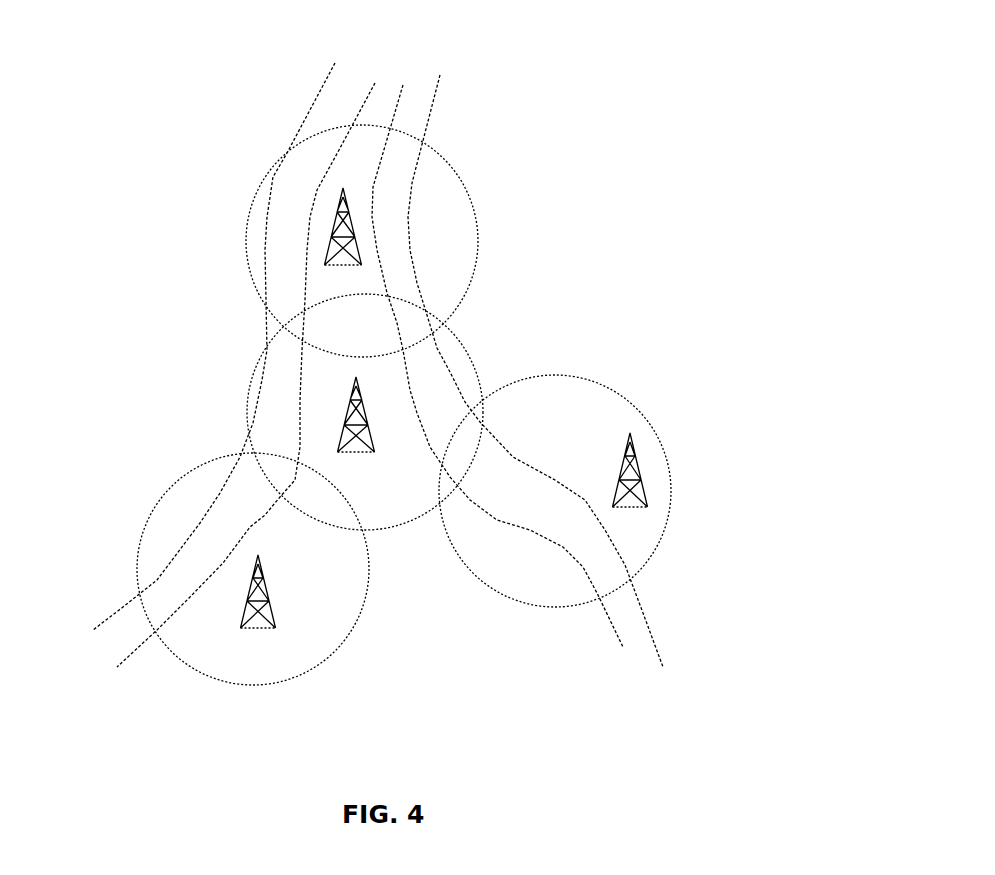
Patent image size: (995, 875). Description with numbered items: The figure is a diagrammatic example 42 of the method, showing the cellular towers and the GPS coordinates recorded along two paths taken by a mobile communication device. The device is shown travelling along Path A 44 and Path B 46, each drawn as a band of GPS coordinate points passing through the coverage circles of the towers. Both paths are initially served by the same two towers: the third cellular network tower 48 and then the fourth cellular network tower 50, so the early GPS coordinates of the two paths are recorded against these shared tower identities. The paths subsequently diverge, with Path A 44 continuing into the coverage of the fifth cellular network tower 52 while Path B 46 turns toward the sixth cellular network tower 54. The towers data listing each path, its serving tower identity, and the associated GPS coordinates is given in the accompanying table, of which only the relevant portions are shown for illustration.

The example illustration 42 is at (132, 135).
The Path A 44 is at (355, 77).
The Path B 46 is at (433, 72).
The cellular network tower ID T3 48 is at (347, 214).
The cellular network tower ID T4 50 is at (380, 440).
The cellular network tower ID T5 52 is at (262, 632).
The cellular network tower ID T6 54 is at (643, 495).